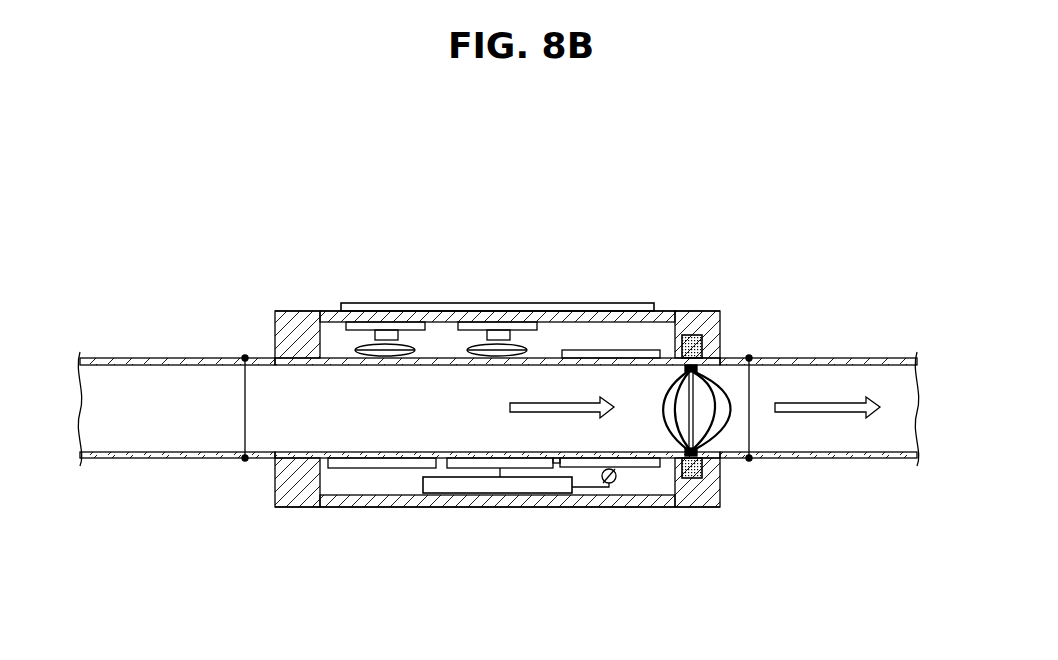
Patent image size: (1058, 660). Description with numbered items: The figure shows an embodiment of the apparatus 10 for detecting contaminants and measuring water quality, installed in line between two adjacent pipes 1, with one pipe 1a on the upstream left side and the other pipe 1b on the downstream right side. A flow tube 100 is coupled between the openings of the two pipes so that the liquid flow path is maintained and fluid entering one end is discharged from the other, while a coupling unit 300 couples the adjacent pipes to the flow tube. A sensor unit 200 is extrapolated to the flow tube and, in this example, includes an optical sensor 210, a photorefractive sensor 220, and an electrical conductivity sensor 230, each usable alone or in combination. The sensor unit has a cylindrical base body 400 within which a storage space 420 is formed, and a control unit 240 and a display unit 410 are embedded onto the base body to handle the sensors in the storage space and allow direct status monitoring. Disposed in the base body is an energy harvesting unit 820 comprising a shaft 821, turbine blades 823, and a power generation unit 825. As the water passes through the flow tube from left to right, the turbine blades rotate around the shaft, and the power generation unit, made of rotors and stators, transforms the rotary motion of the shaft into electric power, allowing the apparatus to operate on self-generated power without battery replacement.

The adjacent pipes 1 is at (156, 350).
The one pipe 1a is at (206, 357).
The other pipe 1b is at (826, 357).
The apparatus for detecting contaminants and/or measuring water quality 10 is at (586, 220).
The flow tube 100 is at (261, 357).
The sensor unit 200 is at (534, 232).
The optical sensor 210 is at (334, 325).
The photorefractive sensor 220 is at (449, 325).
The electrical conductivity sensor 230 is at (578, 331).
The control unit 240 is at (488, 490).
The coupling unit 300 is at (755, 341).
The base body 400 is at (692, 322).
The display unit 410 is at (628, 303).
The storage space 420 is at (658, 476).
The energy harvesting unit 820 is at (852, 492).
The shaft 821 is at (700, 456).
The turbine blades 823 is at (717, 416).
The power generation unit 825 is at (702, 476).